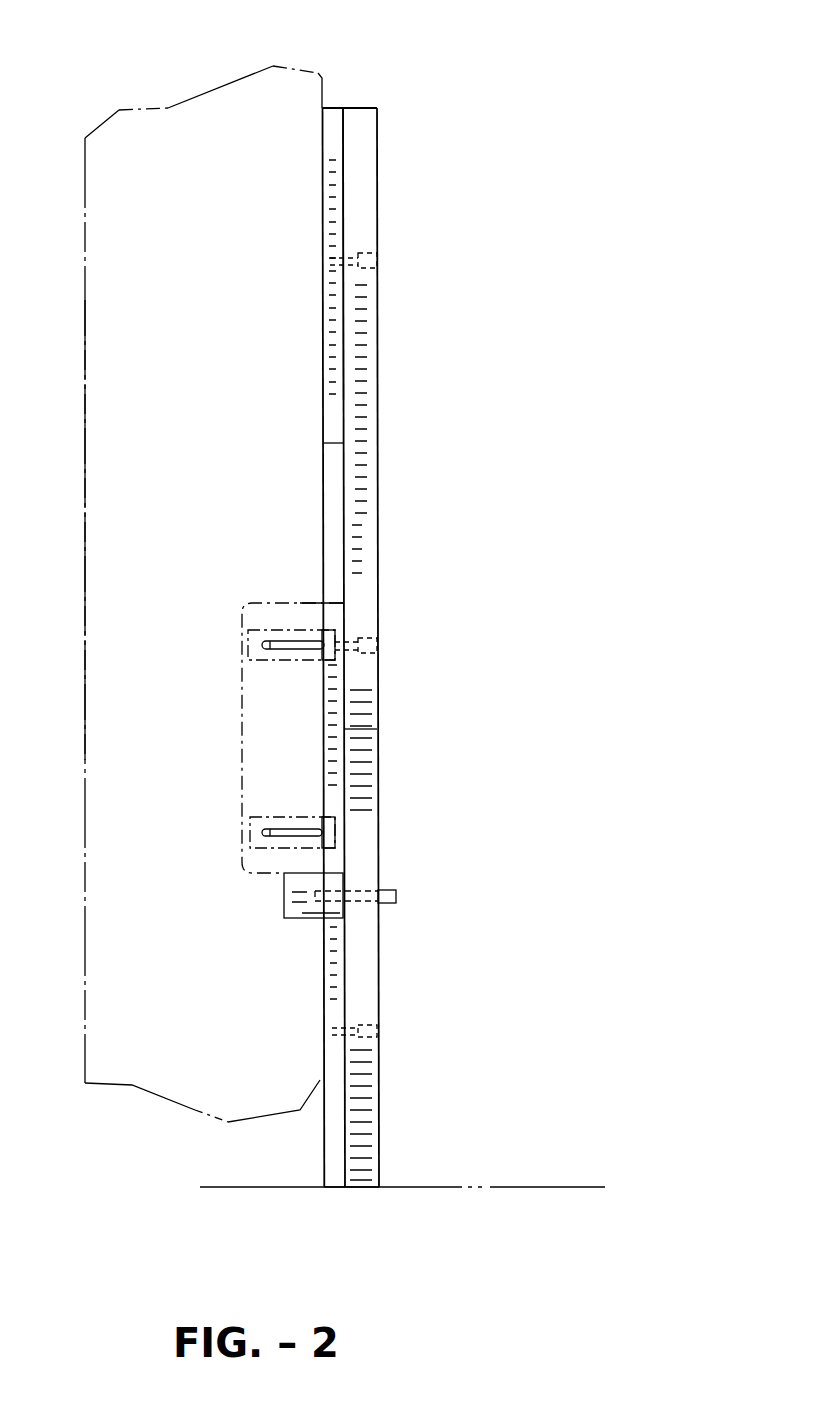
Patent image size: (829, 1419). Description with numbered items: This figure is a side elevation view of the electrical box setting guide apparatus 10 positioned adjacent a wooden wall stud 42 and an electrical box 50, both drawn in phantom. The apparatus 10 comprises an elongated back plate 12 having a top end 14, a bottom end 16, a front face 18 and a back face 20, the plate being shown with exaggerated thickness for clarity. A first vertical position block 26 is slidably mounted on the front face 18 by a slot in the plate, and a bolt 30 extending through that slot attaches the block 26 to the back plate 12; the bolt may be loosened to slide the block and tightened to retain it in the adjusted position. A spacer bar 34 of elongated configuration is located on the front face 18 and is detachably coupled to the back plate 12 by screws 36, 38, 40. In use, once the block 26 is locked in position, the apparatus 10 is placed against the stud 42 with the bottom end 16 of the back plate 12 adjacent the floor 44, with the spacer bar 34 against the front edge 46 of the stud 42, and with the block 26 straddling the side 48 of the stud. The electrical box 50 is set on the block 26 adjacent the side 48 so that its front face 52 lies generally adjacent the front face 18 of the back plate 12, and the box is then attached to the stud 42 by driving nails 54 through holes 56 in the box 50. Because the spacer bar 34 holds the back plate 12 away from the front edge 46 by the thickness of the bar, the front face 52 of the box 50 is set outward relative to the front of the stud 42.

The electrical box setting guide apparatus 10 is at (519, 89).
The back plate 12 is at (368, 184).
The top end 14 is at (364, 95).
The bottom end 16 is at (353, 1207).
The front face 18 is at (339, 443).
The back face 20 is at (383, 508).
The first vertical position block 26 is at (298, 912).
The bolt 30 is at (397, 893).
The spacer bar 34 is at (328, 145).
The screw 36 is at (376, 270).
The screw 38 is at (370, 637).
The screw 40 is at (366, 1040).
The wooden wall stud 42 is at (206, 92).
The floor 44 is at (428, 1186).
The front edge of stud 46 is at (333, 95).
The side of stud 48 is at (122, 560).
The electrical box 50 is at (303, 600).
The front face of box 52 is at (352, 729).
The nails 54 is at (270, 660).
The slots or holes 56 is at (270, 625).